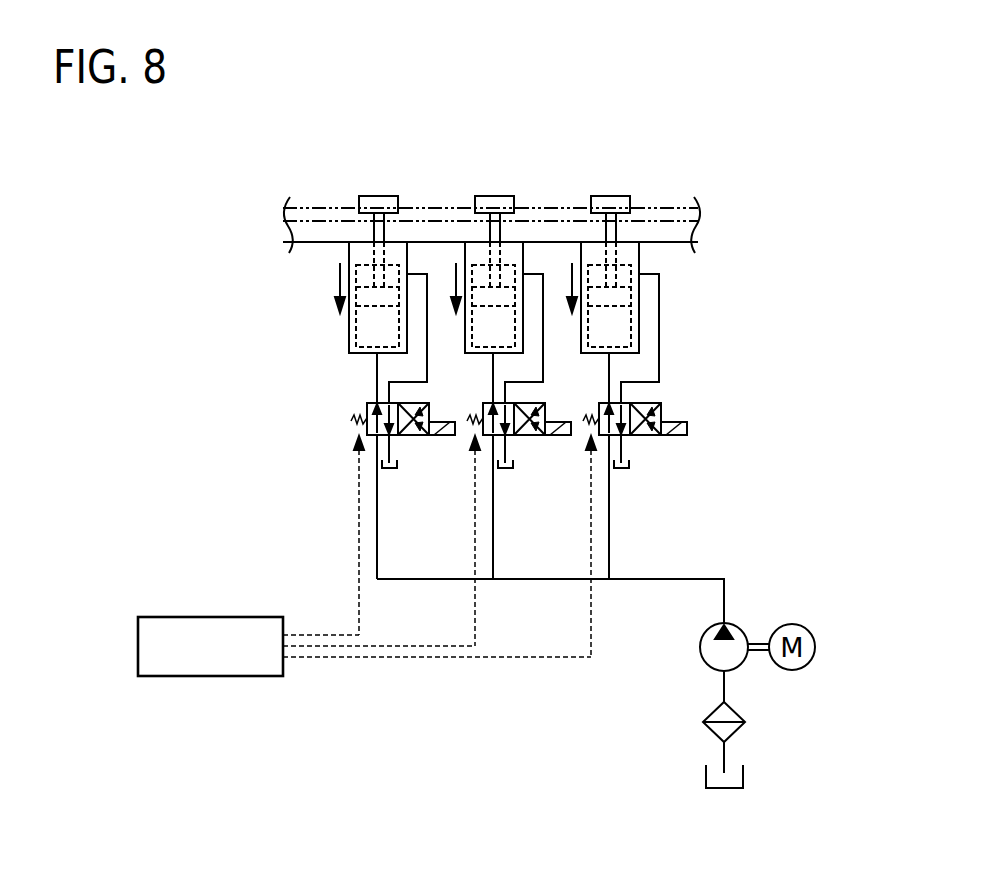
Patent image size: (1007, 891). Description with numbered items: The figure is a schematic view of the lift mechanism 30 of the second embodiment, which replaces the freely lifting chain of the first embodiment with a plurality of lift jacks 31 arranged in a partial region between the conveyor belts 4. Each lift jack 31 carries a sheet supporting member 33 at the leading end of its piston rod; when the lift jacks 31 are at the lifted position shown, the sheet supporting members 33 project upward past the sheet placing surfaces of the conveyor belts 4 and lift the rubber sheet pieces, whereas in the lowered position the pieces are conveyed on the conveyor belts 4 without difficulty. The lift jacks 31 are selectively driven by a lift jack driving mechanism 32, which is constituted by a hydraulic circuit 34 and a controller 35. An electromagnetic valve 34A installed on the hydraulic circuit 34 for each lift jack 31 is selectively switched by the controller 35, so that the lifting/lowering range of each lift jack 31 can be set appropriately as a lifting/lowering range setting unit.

The conveyor belt 4 is at (680, 205).
The lift mechanism 30 is at (715, 138).
The lift jack 31 is at (382, 196).
The lift jack driving mechanism 32 is at (684, 313).
The sheet supporting member 33 is at (367, 196).
The hydraulic circuit 34 is at (365, 402).
The electromagnetic valve 34A is at (427, 438).
The controller 35 is at (168, 617).